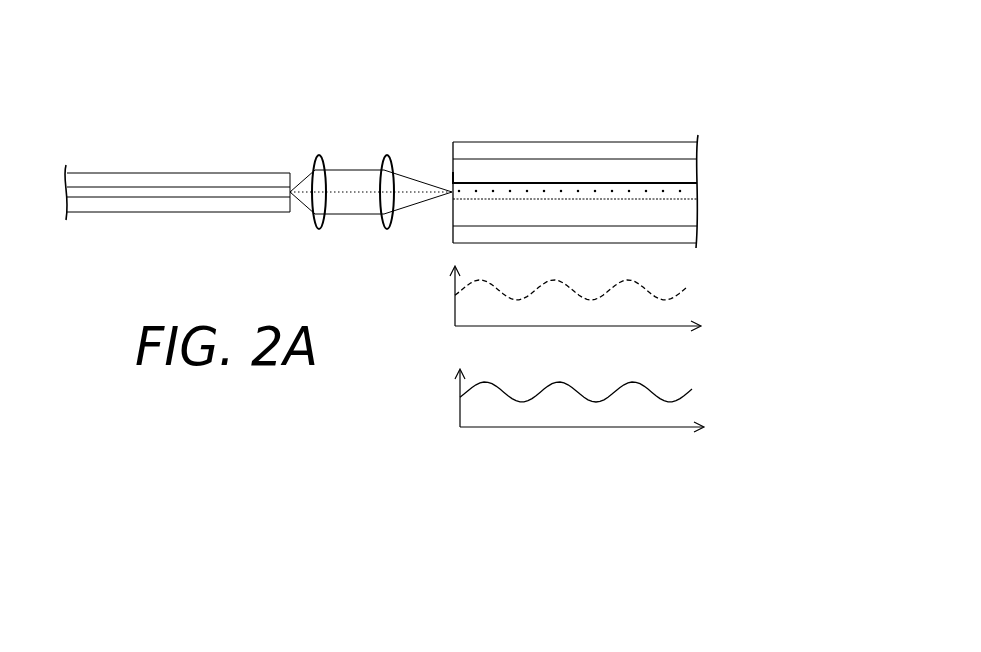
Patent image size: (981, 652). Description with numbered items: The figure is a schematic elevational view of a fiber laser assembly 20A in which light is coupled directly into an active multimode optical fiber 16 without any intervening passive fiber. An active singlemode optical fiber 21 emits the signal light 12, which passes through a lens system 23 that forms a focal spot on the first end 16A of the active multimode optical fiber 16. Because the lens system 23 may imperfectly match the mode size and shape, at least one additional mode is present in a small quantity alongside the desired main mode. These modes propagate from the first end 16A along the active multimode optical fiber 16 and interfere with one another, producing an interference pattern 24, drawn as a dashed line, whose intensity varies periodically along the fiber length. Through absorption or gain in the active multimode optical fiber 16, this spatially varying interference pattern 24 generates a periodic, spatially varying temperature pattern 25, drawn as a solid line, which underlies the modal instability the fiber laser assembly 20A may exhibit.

The fiber laser assembly 20A is at (288, 37).
The active singlemode optical fiber 21 is at (163, 173).
The signal light 12 is at (357, 200).
The lens system 23 is at (346, 121).
The active multimode optical fiber 16 is at (594, 142).
The first end 16A is at (452, 178).
The interference pattern 24 is at (746, 302).
The temperature pattern 25 is at (744, 388).